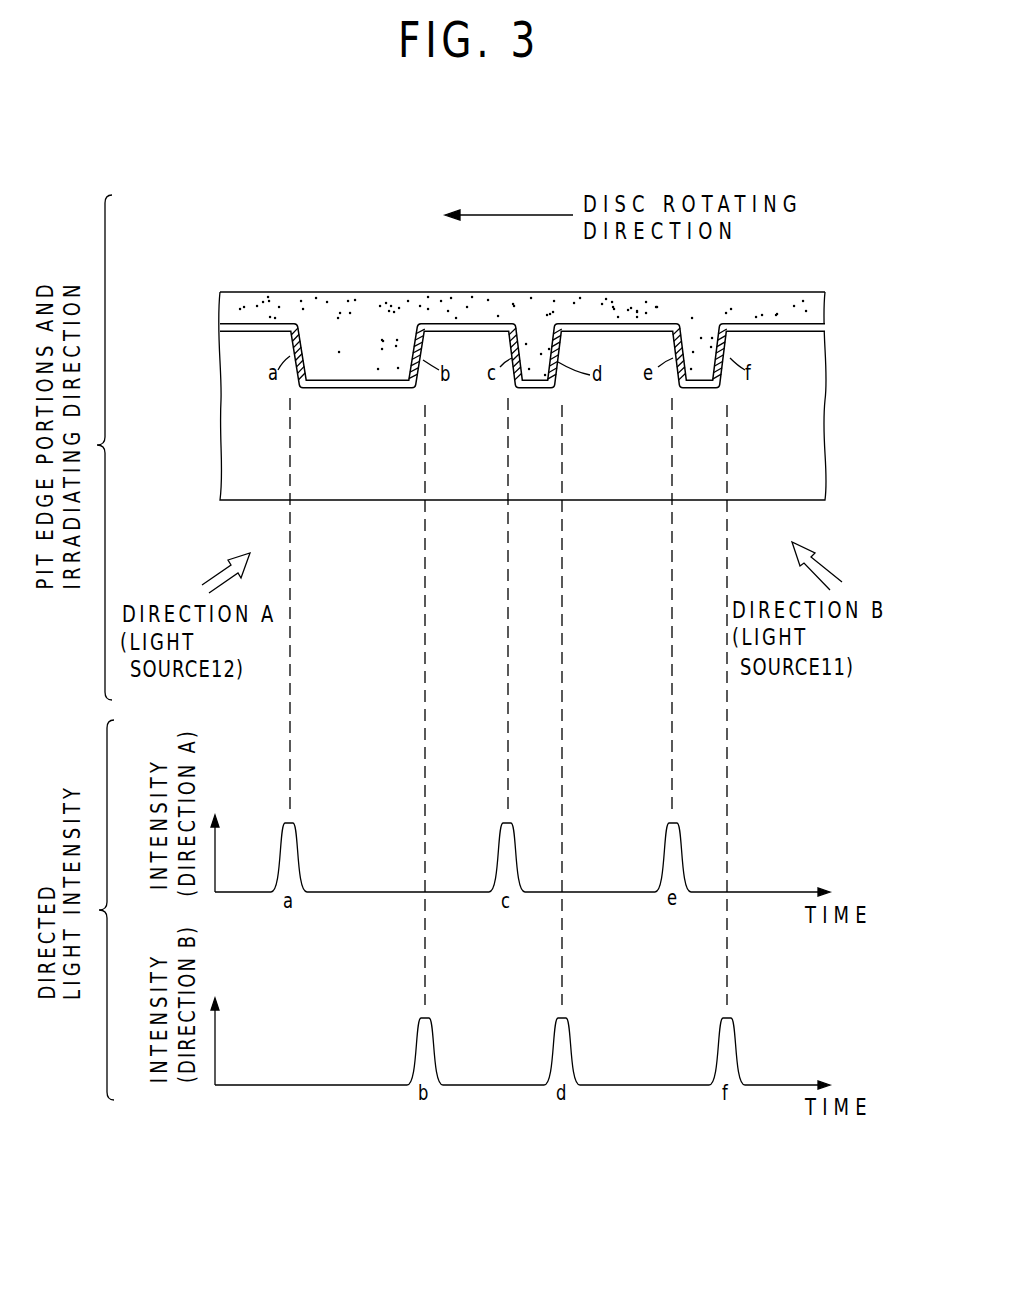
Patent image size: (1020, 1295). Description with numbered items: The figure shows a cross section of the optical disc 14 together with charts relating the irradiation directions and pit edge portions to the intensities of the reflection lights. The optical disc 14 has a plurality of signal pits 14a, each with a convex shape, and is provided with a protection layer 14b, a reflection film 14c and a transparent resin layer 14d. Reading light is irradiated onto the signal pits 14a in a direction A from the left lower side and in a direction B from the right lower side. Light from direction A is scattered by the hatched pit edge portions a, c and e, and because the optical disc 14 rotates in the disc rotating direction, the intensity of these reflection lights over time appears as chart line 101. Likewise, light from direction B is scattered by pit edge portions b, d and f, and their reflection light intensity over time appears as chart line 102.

The optical disc 14 is at (762, 290).
The signal pits 14a is at (355, 390).
The protection layer 14b is at (815, 312).
The reflection film 14c is at (817, 330).
The transparent resin layer 14d is at (813, 407).
The chart line 101 is at (763, 892).
The chart line 102 is at (773, 1085).